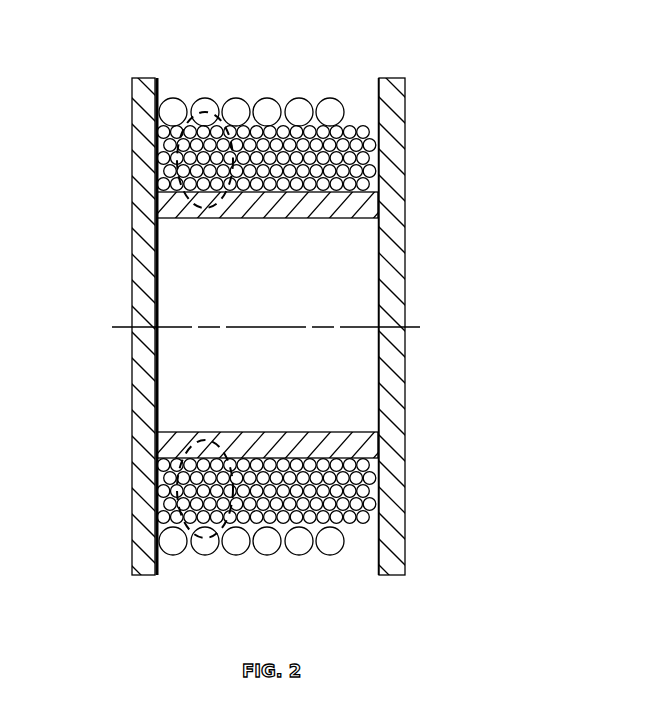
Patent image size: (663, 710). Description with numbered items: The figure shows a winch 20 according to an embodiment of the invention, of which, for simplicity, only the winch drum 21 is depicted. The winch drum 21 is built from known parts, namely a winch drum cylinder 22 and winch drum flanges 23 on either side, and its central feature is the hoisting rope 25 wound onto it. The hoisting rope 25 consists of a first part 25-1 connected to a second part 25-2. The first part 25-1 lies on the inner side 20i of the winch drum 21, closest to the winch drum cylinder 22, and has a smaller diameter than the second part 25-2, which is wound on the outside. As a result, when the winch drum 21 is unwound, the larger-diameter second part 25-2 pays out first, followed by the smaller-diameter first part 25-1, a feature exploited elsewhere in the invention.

The winch 20 is at (498, 99).
The inner side of the winch drum 20i is at (215, 443).
The winch drum 21 is at (357, 279).
The winch drum cylinder 22 is at (362, 210).
The winch drum flanges 23 is at (390, 107).
The hoisting rope 25 is at (261, 324).
The first part of the hoisting rope 25-1 is at (160, 160).
The second part of the hoisting rope 25-2 is at (348, 80).